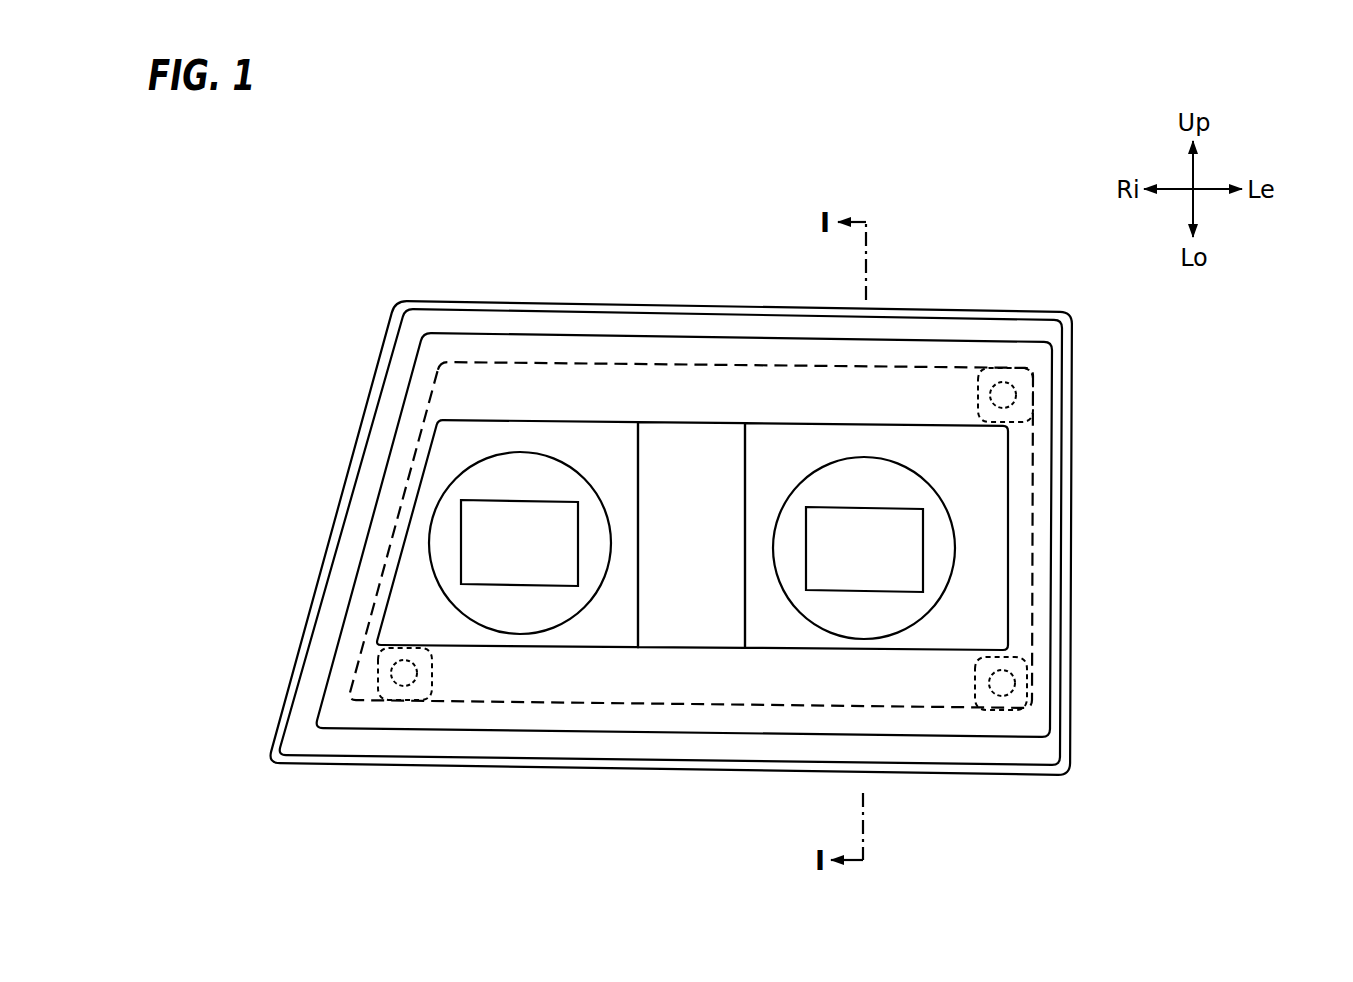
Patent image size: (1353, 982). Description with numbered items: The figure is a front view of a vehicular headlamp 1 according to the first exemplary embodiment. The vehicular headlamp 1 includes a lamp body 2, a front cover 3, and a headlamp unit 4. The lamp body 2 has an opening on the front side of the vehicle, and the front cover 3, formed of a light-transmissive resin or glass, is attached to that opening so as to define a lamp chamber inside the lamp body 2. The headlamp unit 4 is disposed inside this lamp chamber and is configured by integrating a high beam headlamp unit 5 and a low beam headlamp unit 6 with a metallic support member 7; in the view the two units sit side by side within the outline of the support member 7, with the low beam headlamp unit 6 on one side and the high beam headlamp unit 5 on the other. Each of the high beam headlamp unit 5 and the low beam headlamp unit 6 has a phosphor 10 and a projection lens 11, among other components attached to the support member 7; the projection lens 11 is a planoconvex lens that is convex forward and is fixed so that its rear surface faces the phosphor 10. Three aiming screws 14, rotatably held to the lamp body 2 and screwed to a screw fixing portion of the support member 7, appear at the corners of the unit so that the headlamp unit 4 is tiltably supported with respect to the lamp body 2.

The vehicular headlamp 1 is at (526, 169).
The lamp body 2 is at (1068, 368).
The front cover 3 is at (1054, 428).
The headlamp unit 4 is at (613, 245).
The high beam headlamp unit 5 is at (920, 452).
The low beam headlamp unit 6 is at (574, 457).
The support member 7 is at (679, 497).
The phosphor 10 is at (923, 558).
The projection lens 11 is at (933, 487).
The aiming screws 14 is at (1003, 383).